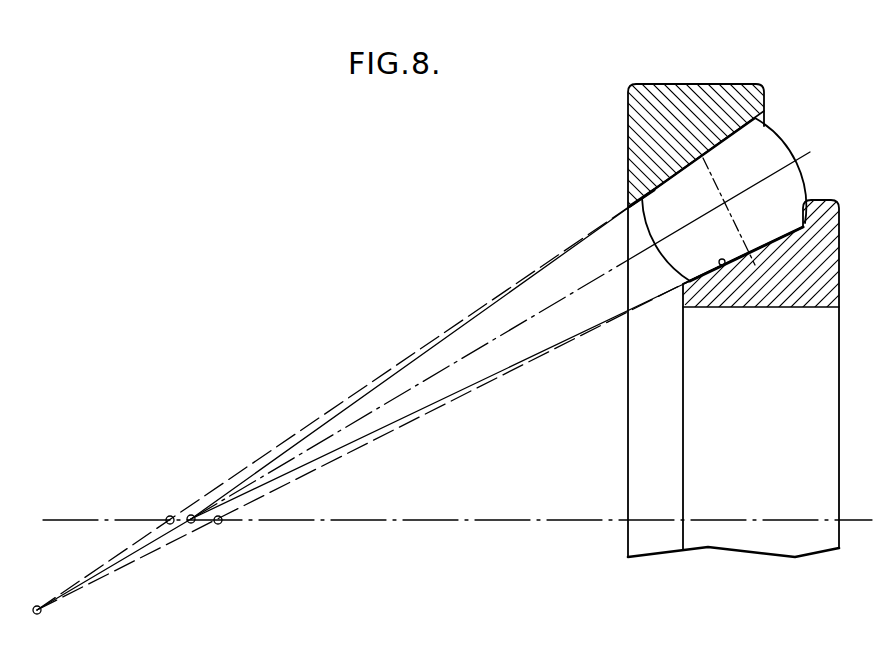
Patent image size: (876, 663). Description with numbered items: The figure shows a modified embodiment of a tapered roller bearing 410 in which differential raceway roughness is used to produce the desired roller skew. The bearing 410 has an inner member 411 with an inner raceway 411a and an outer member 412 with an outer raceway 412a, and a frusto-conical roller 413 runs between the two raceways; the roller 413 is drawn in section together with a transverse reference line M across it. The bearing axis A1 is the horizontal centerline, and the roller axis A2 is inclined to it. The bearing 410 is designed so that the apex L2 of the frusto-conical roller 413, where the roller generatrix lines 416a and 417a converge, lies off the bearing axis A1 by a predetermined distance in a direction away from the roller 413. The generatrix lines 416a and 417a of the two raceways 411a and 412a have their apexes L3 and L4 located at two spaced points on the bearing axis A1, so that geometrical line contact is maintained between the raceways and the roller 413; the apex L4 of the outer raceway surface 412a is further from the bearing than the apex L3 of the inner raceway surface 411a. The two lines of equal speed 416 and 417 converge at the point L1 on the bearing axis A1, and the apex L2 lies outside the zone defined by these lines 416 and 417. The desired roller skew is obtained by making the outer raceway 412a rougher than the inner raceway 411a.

The bearing 410 is at (699, 82).
The inner member 411 is at (787, 297).
The inner raceway 411a is at (721, 266).
The outer member 412 is at (668, 54).
The outer raceway 412a is at (637, 195).
The frusto-conical roller 413 is at (782, 220).
The line of equal speed 416 is at (488, 372).
The line of the inner raceway 416a is at (487, 447).
The line of equal speed 417 is at (470, 319).
The line of the outer raceway 417a is at (297, 431).
The bearing axis A1 is at (548, 522).
The roller axis A2 is at (561, 298).
The roller mid-plane line M is at (720, 192).
The apex of lines of equal speed L1 is at (192, 514).
The apex of the roller L2 is at (42, 613).
The apex of the inner raceway L3 is at (220, 525).
The apex of the outer raceway L4 is at (168, 515).